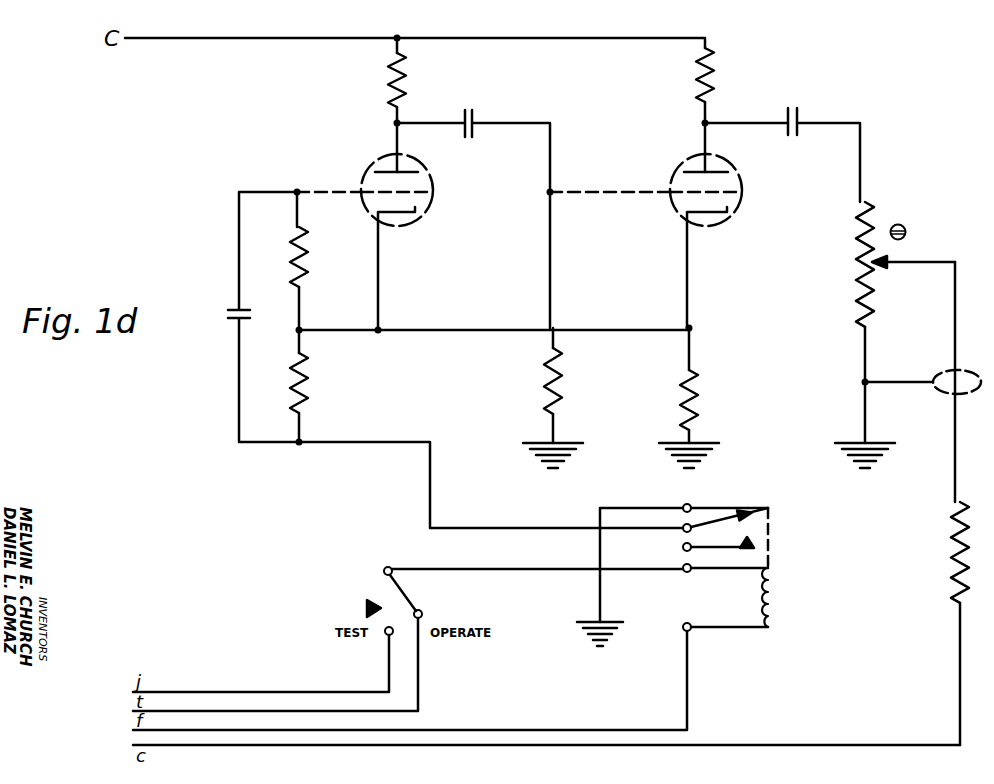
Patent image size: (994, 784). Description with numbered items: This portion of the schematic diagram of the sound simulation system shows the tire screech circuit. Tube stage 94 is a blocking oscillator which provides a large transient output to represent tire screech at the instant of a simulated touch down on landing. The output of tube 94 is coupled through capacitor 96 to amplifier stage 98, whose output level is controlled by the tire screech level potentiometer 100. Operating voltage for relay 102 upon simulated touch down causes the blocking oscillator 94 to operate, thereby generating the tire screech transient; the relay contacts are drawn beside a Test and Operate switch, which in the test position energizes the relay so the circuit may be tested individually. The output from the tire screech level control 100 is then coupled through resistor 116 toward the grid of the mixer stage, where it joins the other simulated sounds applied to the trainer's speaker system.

The blocking oscillator tube stage 94 is at (382, 160).
The capacitor 96 is at (476, 120).
The amplifier stage 98 is at (737, 215).
The tire screech level potentiometer 100 is at (857, 298).
The relay 102 is at (777, 590).
The resistor 116 is at (955, 549).